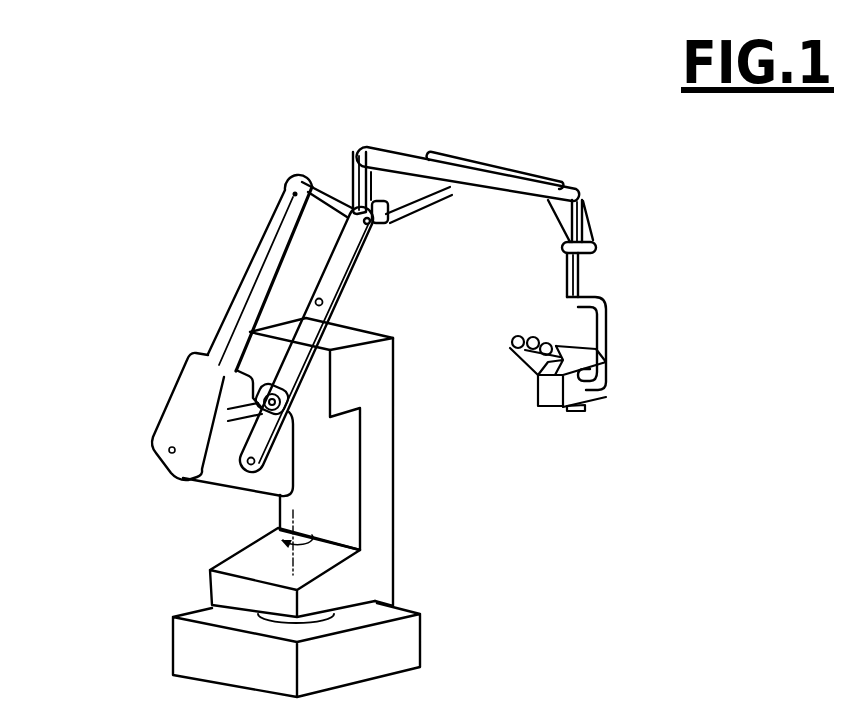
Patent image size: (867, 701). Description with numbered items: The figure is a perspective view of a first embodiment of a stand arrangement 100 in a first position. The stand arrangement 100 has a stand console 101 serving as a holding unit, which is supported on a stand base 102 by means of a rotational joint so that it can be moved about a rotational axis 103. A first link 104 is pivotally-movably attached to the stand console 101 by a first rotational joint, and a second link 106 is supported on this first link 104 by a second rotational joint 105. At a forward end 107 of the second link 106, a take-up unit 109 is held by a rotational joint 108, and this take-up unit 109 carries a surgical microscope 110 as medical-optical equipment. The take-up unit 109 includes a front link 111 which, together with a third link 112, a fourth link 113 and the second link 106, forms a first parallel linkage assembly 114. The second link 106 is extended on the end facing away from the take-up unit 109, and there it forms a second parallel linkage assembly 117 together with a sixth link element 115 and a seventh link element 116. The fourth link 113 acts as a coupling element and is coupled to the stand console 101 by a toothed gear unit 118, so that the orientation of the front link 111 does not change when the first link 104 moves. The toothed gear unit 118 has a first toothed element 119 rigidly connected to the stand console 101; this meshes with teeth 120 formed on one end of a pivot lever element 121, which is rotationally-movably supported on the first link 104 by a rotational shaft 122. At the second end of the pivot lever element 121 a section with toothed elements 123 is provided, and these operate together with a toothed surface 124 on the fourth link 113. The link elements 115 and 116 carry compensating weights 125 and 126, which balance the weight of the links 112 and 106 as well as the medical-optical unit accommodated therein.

The stand arrangement 100 is at (443, 553).
The stand console 101 is at (384, 580).
The stand base 102 is at (404, 657).
The rotational axis 103 is at (293, 572).
The first link 104 is at (335, 351).
The second rotational joint 105 is at (400, 231).
The second link 106 is at (482, 158).
The forward end 107 is at (619, 229).
The rotational joint 108 is at (598, 250).
The take-up unit 109 is at (582, 280).
The surgical microscope 110 is at (600, 398).
The front link 111 is at (583, 201).
The third link 112 is at (549, 180).
The fourth link 113 is at (350, 175).
The first parallel linkage assembly 114 is at (447, 128).
The sixth link element 115 is at (260, 267).
The seventh link element 116 is at (225, 473).
The second parallel linkage assembly 117 is at (203, 323).
The toothed gear unit 118 is at (292, 294).
The first toothed element 119 is at (298, 437).
The teeth 120 is at (296, 406).
The pivot lever element 121 is at (277, 376).
The rotational shaft 122 is at (330, 300).
The toothed elements 123 is at (322, 224).
The toothed surface 124 is at (377, 150).
The compensating weight 125 is at (163, 433).
The compensating weight 126 is at (300, 479).